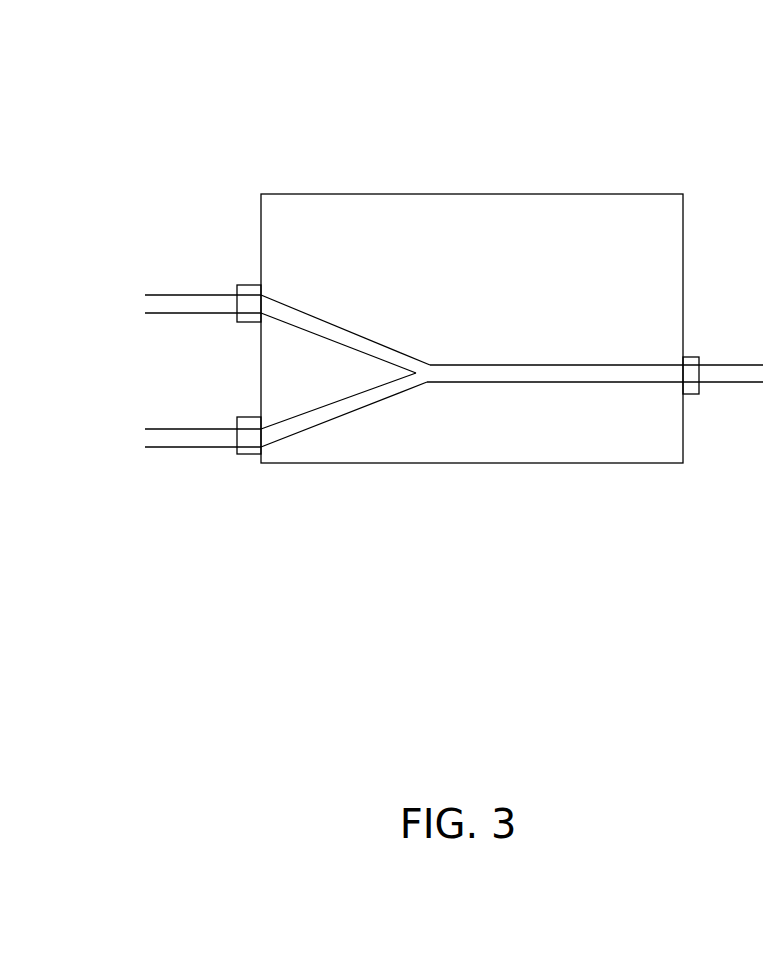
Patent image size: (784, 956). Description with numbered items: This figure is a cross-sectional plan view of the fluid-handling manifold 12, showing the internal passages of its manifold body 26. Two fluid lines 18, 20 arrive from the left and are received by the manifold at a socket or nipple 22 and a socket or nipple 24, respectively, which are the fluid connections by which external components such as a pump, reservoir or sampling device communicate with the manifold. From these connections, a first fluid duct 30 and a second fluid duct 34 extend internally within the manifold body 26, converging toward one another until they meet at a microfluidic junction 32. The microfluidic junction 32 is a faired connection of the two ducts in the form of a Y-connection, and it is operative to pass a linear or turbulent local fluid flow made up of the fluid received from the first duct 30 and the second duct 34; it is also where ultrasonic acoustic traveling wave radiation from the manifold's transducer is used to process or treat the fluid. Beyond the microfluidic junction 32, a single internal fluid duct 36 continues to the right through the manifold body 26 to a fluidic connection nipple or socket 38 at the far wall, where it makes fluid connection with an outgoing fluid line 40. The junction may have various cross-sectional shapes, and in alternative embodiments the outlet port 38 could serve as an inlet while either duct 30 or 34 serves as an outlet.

The fluid-handling manifold 12 is at (318, 194).
The fluid line 18 is at (168, 302).
The fluid line 20 is at (174, 439).
The socket or nipple 22 is at (249, 293).
The socket or nipple 24 is at (249, 442).
The manifold body 26 is at (452, 218).
The first fluid duct 30 is at (363, 343).
The microfluidic junction 32 is at (425, 373).
The second fluid duct 34 is at (330, 418).
The internal fluid duct 36 is at (621, 374).
The fluidic connection nipple or socket 38 is at (690, 358).
The fluid line 40 is at (733, 378).